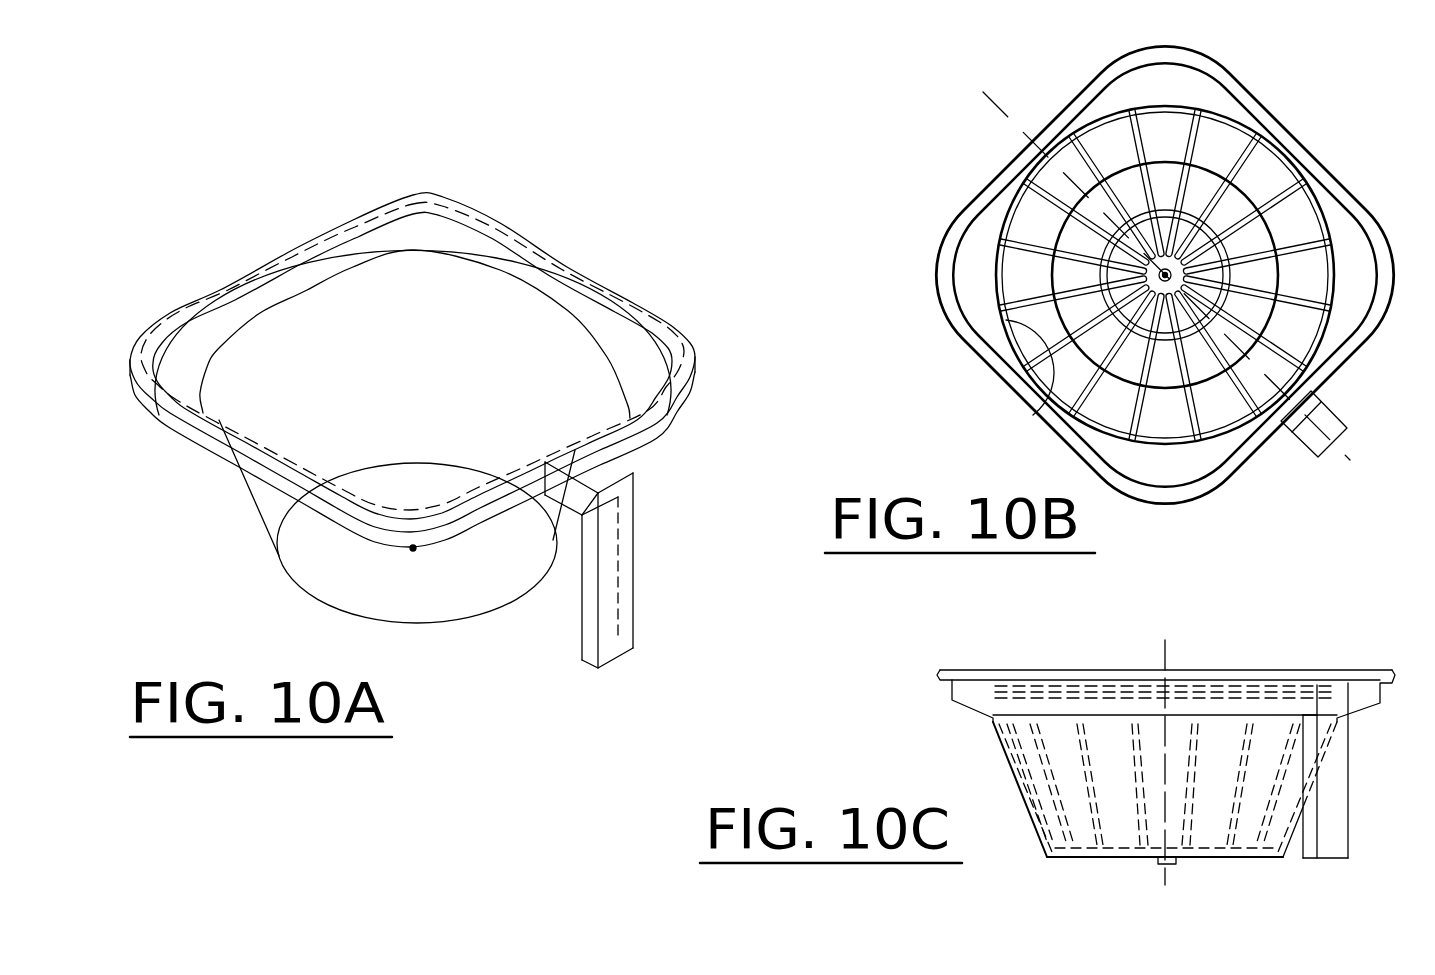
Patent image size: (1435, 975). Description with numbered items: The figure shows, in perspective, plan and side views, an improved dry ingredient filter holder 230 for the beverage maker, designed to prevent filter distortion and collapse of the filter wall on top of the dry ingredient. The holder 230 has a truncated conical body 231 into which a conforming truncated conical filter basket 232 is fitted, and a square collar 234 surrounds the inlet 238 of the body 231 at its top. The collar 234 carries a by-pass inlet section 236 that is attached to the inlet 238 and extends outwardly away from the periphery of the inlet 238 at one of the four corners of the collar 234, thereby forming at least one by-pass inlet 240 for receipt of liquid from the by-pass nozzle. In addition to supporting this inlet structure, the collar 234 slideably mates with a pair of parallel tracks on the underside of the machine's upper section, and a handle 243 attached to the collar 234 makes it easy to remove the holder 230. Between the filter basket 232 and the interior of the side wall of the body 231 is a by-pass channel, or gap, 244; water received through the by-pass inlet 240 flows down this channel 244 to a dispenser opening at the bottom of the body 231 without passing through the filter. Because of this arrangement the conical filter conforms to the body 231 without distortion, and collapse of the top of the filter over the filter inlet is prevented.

In FIG. 10A, the dry ingredient filter holder 230 is at (592, 241).
In FIG. 10B, the dry ingredient filter holder 230 is at (976, 155).
In FIG. 10C, the dry ingredient filter holder 230 is at (1212, 651).
In FIG. 10A, the truncated conical body 231 is at (250, 508).
In FIG. 10A, the filter basket 232 is at (415, 436).
In FIG. 10B, the filter basket 232 is at (1172, 378).
In FIG. 10C, the filter basket 232 is at (1090, 747).
In FIG. 10A, the square collar 234 is at (684, 368).
In FIG. 10B, the square collar 234 is at (1257, 112).
In FIG. 10B, the by-pass inlet section 236 is at (947, 257).
In FIG. 10C, the by-pass inlet section 236 is at (947, 690).
In FIG. 10A, the inlet 238 is at (420, 280).
In FIG. 10B, the inlet 238 is at (1038, 412).
In FIG. 10A, the by-pass inlet 240 is at (188, 377).
In FIG. 10B, the by-pass inlet 240 is at (976, 277).
In FIG. 10C, the by-pass inlet 240 is at (973, 692).
In FIG. 10A, the handle 243 is at (630, 523).
In FIG. 10B, the handle 243 is at (1330, 437).
In FIG. 10C, the handle 243 is at (1337, 785).
In FIG. 10C, the by-pass channel 244 is at (1007, 745).